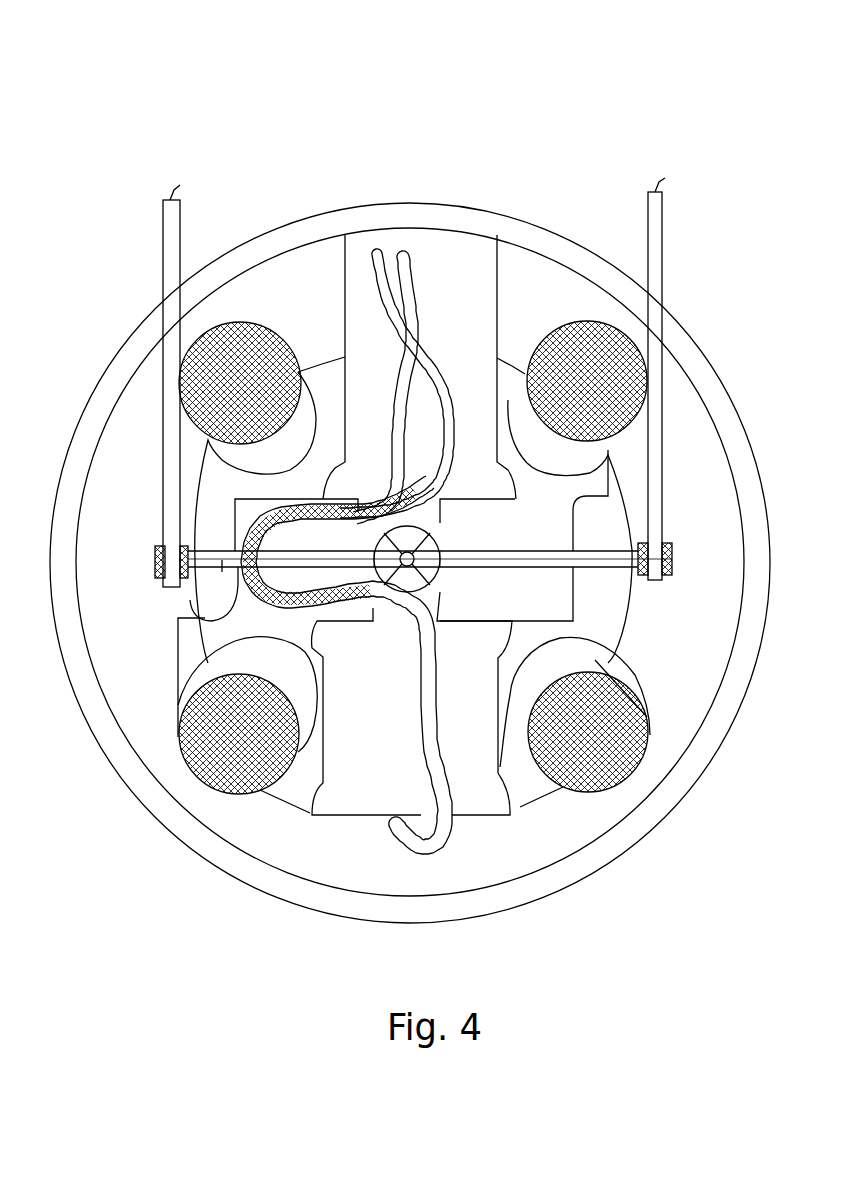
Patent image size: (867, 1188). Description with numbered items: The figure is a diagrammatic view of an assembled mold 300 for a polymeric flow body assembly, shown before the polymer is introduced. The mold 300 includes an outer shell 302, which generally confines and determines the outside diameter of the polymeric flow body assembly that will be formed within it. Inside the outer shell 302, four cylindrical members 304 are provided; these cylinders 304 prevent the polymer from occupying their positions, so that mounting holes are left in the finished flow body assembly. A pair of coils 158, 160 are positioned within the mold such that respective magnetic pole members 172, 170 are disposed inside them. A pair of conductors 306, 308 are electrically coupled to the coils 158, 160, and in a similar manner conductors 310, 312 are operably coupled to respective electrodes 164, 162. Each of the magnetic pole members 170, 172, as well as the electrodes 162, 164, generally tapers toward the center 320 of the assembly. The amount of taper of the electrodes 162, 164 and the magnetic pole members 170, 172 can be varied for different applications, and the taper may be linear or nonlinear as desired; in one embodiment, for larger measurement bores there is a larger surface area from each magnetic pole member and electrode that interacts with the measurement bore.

The mold 300 is at (617, 99).
The outer shell 302 is at (522, 230).
The cylindrical members 304 is at (205, 372).
The conductor 306 is at (375, 252).
The conductor 308 is at (407, 252).
The conductor 310 is at (668, 458).
The conductor 312 is at (172, 232).
The coil 158 is at (480, 312).
The coil 160 is at (460, 773).
The electrode 162 is at (222, 565).
The electrode 164 is at (585, 558).
The magnetic pole member 170 is at (420, 592).
The magnetic pole member 172 is at (365, 507).
The center 320 is at (258, 605).